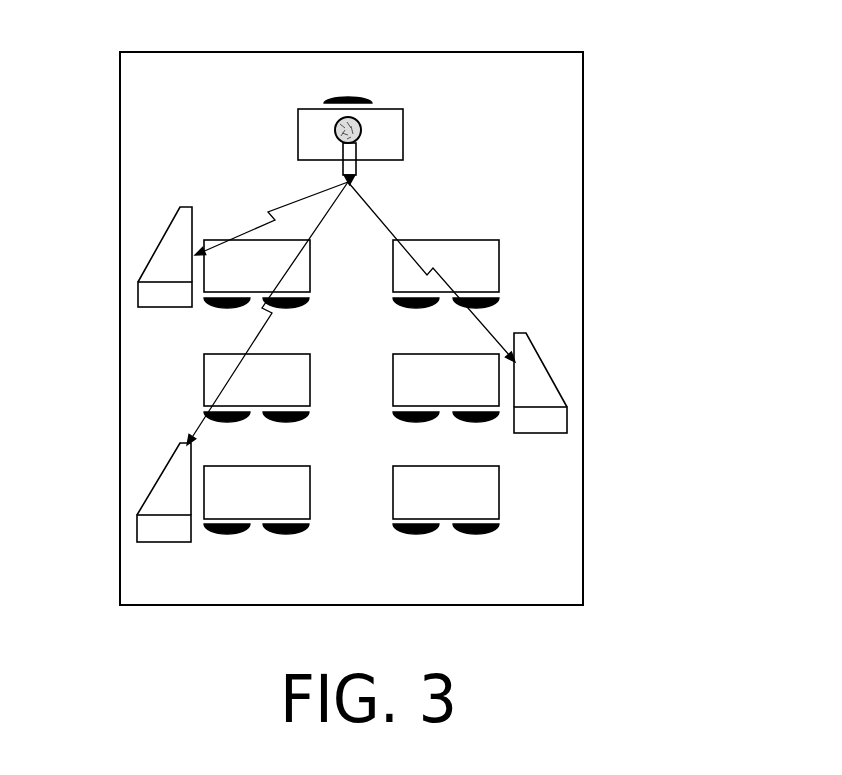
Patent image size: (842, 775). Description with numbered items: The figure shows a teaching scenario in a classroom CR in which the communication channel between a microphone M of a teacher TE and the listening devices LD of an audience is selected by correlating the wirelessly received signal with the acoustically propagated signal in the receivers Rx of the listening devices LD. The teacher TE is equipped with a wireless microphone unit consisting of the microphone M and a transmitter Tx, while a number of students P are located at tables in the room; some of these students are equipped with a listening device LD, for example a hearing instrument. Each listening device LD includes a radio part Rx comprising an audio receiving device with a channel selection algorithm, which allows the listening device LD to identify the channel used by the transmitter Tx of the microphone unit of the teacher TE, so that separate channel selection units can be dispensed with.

The classroom CR is at (583, 203).
The teacher TE is at (347, 97).
The microphone M is at (337, 133).
The transmitter Tx is at (352, 158).
The students P is at (221, 309).
The listening device LD is at (155, 258).
The radio part Rx is at (352, 412).